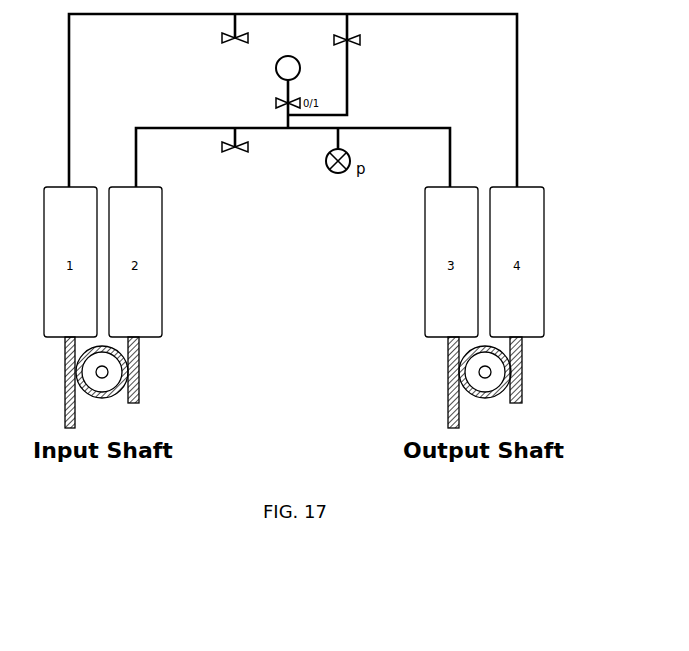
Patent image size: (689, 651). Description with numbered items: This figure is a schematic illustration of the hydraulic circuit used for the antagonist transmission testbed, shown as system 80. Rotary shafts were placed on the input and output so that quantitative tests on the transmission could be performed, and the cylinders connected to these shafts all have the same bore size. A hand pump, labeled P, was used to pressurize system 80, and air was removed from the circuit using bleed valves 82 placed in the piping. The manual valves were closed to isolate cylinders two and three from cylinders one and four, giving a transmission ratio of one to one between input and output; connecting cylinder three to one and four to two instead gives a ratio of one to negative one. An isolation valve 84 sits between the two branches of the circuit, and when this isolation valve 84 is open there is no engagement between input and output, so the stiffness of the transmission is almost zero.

The system 80 is at (552, 101).
The bleed valve 82 is at (234, 112).
The isolation valve 84 is at (410, 39).